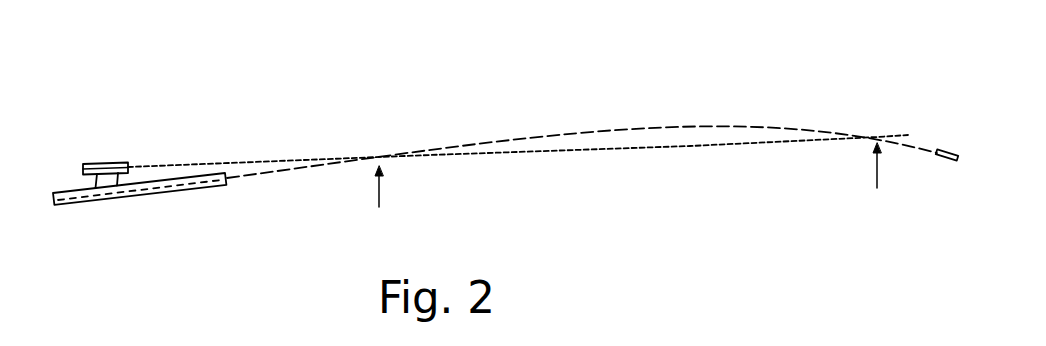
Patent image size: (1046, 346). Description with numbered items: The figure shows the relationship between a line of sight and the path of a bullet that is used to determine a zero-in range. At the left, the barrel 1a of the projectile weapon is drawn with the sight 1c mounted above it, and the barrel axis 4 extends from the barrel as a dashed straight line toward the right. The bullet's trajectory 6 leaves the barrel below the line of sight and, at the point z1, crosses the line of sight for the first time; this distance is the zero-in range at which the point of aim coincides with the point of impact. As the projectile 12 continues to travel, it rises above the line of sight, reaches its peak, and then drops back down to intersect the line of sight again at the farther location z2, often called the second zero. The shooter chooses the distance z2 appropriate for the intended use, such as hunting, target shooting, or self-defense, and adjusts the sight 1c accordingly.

The barrel of the projectile weapon 1a is at (118, 201).
The sight 1c is at (103, 163).
The barrel axis of the projectile weapon 4 is at (622, 148).
The trajectory 6 is at (670, 119).
The projectile 12 is at (953, 160).
The first crossing point of the trajectory z1 is at (379, 202).
The second zero location z2 is at (880, 182).